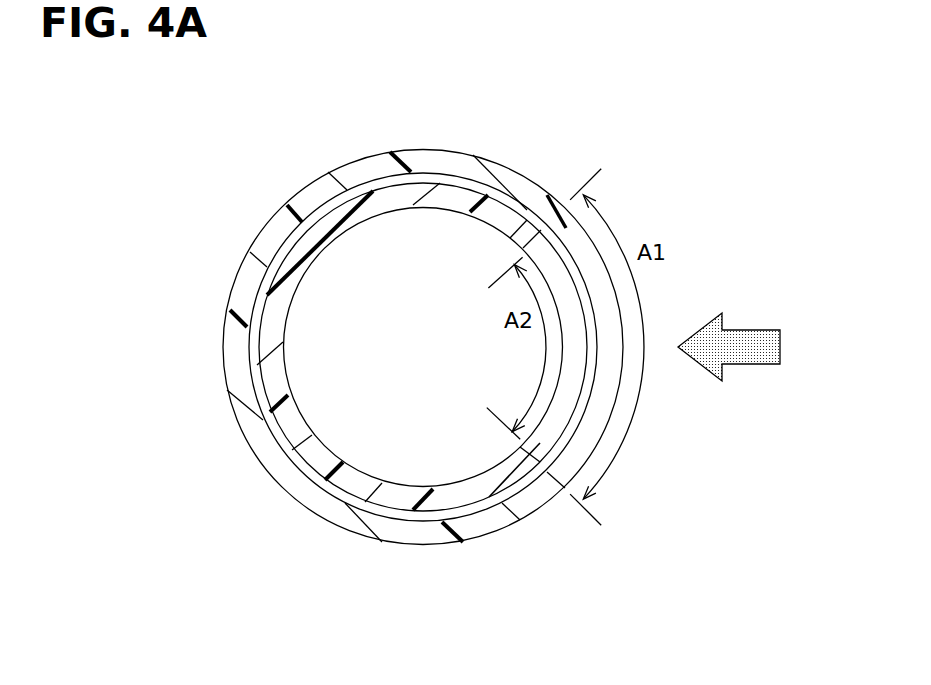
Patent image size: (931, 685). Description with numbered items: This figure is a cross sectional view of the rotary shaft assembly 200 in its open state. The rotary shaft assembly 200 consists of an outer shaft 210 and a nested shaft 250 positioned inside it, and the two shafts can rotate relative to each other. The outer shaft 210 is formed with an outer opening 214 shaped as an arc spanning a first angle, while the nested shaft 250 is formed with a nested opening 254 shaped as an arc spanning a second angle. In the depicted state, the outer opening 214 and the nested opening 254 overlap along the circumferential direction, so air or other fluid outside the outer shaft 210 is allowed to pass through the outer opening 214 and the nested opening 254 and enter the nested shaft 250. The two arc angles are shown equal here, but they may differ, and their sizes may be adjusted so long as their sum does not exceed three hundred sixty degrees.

The rotary shaft assembly 200 is at (229, 208).
The outer shaft 210 is at (428, 150).
The outer opening 214 is at (548, 200).
The nested shaft 250 is at (362, 190).
The nested opening 254 is at (533, 240).